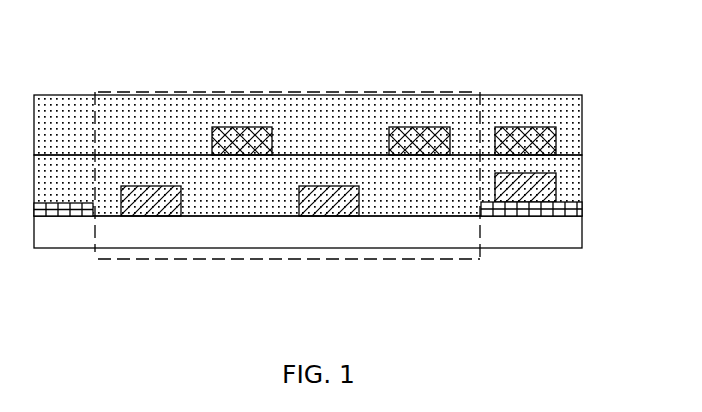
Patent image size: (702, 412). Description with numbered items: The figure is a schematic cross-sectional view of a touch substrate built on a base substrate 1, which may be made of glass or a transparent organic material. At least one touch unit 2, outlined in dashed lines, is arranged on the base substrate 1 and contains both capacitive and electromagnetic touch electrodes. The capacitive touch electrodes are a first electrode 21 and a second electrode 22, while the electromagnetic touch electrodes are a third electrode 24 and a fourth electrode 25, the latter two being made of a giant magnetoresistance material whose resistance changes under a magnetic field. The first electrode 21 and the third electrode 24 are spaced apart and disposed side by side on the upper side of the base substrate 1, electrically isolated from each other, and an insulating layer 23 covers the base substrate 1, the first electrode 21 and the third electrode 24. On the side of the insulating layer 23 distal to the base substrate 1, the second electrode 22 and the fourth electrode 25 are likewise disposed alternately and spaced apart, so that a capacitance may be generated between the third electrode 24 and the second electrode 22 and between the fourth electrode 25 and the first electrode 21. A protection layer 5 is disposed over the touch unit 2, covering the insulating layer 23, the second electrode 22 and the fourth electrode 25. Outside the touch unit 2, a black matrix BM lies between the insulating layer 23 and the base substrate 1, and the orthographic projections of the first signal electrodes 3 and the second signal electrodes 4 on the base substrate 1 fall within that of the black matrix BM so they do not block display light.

The base substrate 1 is at (460, 232).
The touch unit 2 is at (102, 262).
The first signal electrode 3 is at (507, 140).
The second signal electrode 4 is at (538, 182).
The protection layer 5 is at (296, 107).
The first electrode 21 is at (145, 203).
The second electrode 22 is at (426, 127).
The insulating layer 23 is at (397, 199).
The third electrode 24 is at (327, 203).
The fourth electrode 25 is at (240, 137).
The black matrix BM is at (45, 210).